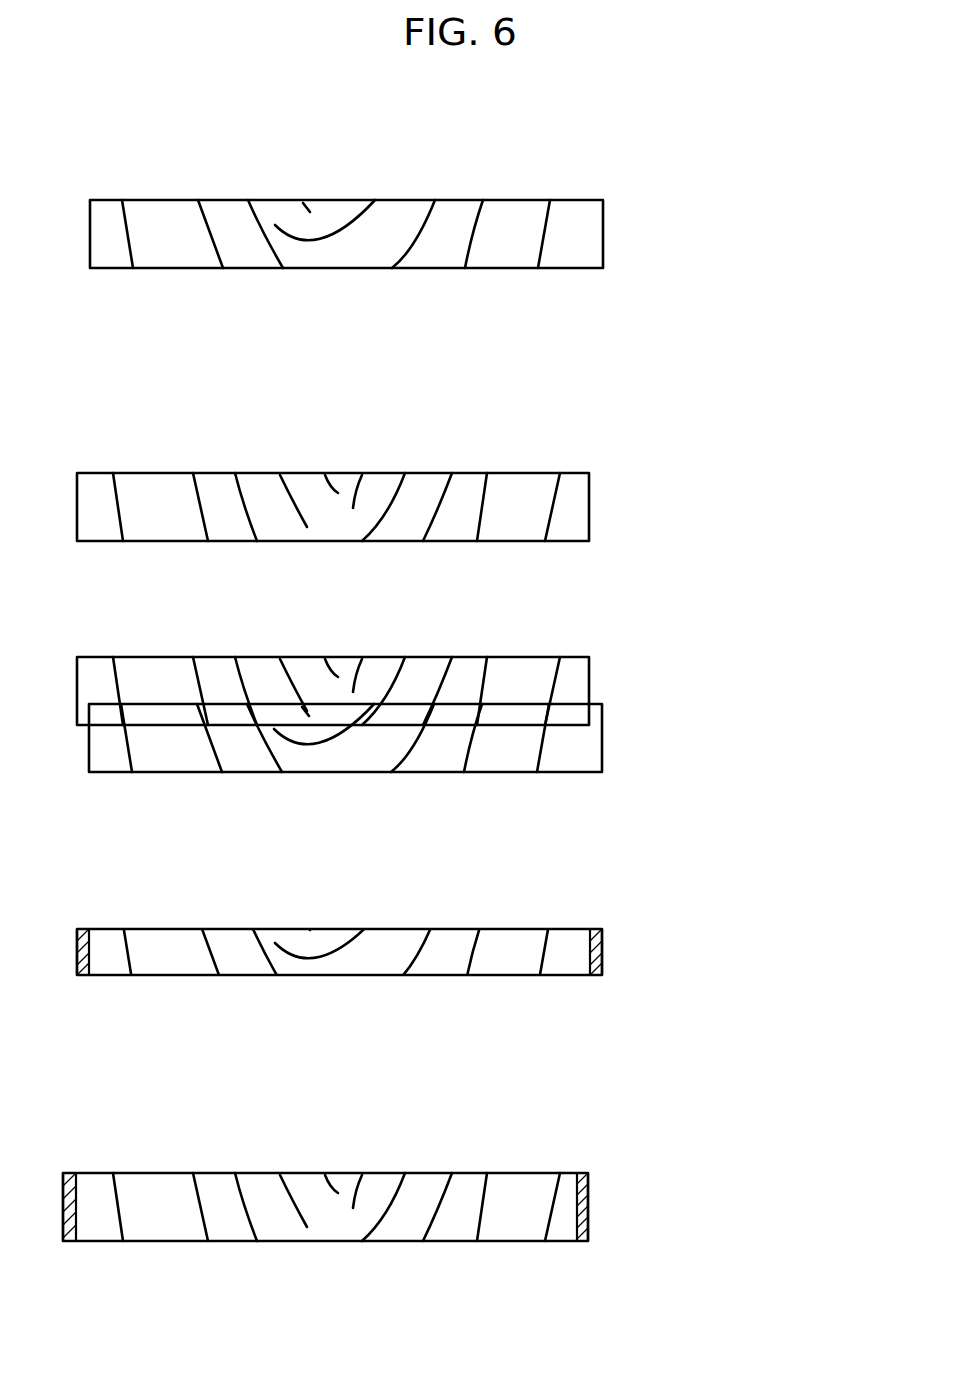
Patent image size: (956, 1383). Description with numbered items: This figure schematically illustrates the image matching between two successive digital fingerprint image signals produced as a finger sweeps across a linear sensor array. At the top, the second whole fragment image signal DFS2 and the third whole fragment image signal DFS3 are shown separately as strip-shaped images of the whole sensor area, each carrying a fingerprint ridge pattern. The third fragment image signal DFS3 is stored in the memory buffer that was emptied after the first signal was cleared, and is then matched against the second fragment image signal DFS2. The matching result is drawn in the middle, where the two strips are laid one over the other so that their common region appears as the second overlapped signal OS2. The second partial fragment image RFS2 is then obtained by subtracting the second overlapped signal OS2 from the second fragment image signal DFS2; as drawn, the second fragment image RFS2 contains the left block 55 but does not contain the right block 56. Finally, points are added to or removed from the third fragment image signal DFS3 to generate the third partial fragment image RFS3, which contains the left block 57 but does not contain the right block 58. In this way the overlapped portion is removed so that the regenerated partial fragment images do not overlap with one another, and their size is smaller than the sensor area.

The second whole fragment image signal DFS2 is at (603, 228).
The third whole fragment image signal DFS3 is at (589, 513).
The second overlapped signal OS2 is at (182, 713).
The second partial fragment image RFS2 is at (426, 998).
The third partial fragment image RFS3 is at (419, 1254).
The left block 55 is at (82, 975).
The right block 56 is at (594, 975).
The left block 57 is at (68, 1241).
The right block 58 is at (580, 1241).